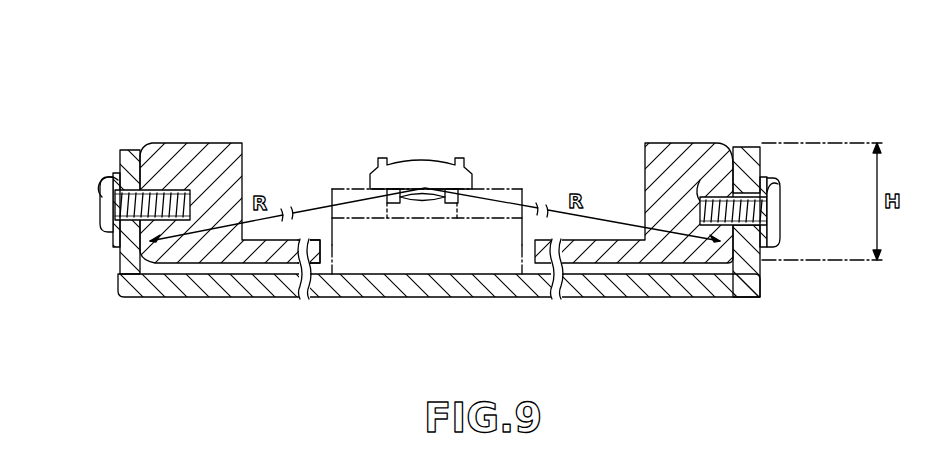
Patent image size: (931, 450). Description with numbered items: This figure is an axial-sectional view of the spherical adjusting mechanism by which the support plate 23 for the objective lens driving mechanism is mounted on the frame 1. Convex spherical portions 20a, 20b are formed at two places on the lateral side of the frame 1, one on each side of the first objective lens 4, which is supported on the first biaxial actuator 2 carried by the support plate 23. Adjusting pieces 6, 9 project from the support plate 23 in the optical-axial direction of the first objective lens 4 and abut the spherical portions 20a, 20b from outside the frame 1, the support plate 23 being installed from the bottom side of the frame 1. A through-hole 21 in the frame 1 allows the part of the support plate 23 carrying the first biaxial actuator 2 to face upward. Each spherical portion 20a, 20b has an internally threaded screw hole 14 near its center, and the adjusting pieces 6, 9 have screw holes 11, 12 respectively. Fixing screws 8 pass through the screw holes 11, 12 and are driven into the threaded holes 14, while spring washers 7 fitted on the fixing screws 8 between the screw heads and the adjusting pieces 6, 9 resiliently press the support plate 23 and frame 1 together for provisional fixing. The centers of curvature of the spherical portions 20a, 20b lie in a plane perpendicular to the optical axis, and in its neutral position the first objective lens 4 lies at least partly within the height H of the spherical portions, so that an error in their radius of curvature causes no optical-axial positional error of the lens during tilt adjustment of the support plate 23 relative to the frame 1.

The frame 1 is at (653, 156).
The first biaxial actuator 2 is at (495, 175).
The first objective lens 4 is at (430, 160).
The adjusting piece 6 is at (130, 262).
The spring washer 7 is at (114, 242).
The fixing screw 8 is at (103, 213).
The adjusting piece 9 is at (762, 160).
The screw hole 11 is at (116, 184).
The screw hole 12 is at (775, 192).
The internally threaded screw hole 14 is at (163, 192).
The convex spherical portion 20a is at (148, 142).
The convex spherical portion 20b is at (733, 142).
The through-hole 21 is at (320, 255).
The support plate 23 is at (648, 288).